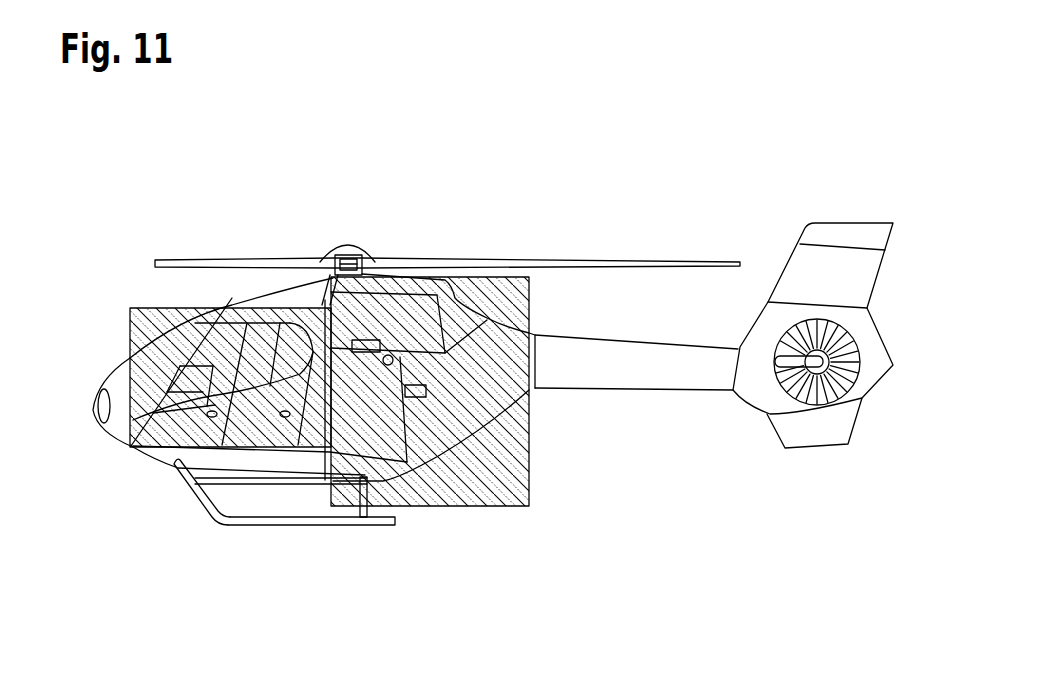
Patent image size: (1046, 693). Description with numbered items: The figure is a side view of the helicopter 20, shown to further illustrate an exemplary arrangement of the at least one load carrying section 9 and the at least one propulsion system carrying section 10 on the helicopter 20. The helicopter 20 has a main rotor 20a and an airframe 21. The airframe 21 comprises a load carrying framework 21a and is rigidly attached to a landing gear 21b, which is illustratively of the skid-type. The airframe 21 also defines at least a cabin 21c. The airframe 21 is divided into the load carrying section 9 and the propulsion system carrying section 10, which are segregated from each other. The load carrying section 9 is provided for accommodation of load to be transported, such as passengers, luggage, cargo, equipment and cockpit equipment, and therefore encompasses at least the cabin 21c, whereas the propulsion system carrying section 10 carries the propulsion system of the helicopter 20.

The load carrying section 9 is at (126, 309).
The propulsion system carrying section 10 is at (531, 297).
The helicopter 20 is at (447, 226).
The main rotor 20a is at (441, 257).
The airframe 21 is at (460, 413).
The load carrying framework 21a is at (176, 471).
The landing gear 21b is at (318, 521).
The cabin 21c is at (126, 362).